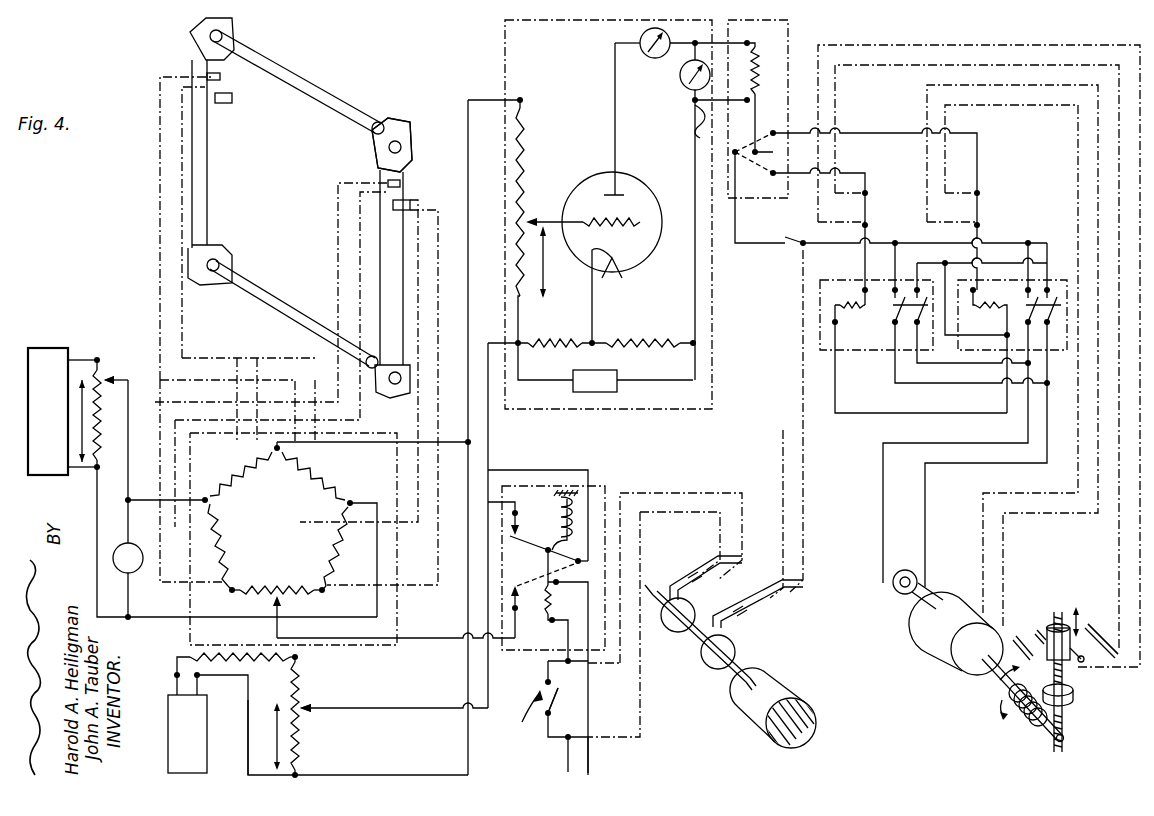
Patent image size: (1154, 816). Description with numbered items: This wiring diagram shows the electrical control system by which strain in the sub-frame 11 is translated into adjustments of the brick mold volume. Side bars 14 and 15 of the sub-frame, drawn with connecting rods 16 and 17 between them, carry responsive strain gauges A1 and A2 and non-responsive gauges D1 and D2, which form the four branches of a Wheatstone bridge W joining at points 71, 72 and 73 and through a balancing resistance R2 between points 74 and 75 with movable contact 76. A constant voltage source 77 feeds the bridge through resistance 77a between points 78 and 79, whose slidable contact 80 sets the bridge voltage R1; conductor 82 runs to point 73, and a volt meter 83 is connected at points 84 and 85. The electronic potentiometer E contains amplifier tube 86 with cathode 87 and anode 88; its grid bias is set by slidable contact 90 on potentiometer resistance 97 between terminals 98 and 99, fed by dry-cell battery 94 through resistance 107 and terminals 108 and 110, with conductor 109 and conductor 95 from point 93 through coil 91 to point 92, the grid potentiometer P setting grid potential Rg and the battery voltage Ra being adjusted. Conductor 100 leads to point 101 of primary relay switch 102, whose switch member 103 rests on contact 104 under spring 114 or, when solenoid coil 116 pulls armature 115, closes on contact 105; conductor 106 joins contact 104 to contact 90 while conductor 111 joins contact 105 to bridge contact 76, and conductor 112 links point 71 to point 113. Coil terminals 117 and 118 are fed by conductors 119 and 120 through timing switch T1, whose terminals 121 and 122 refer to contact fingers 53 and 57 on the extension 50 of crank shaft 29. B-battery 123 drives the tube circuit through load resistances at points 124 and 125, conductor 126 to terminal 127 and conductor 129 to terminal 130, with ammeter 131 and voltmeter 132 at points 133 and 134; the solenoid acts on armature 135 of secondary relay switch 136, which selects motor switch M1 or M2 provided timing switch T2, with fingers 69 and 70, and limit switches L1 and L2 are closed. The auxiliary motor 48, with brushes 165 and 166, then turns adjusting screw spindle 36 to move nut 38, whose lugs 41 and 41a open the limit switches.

The sub-frame 11 is at (402, 123).
The side bar 14 is at (211, 151).
The side bar 15 is at (392, 258).
The upper connecting rod 16 is at (312, 88).
The lower connecting rod 17 is at (282, 303).
The crank shaft 29 is at (786, 690).
The adjusting screw spindle 36 is at (1068, 676).
The nut 38 is at (1060, 624).
The lug 41 is at (1112, 662).
The lug 41a is at (1036, 632).
The auxiliary motor 48 is at (942, 650).
The axial extension 50 is at (744, 700).
The contact finger 53 is at (713, 577).
The cam lever 57 is at (710, 562).
The contact finger 69 is at (752, 592).
The contact finger 70 is at (766, 600).
The bridge point 71 is at (277, 452).
The bridge point 72 is at (352, 500).
The bridge point 73 is at (206, 497).
The connecting point 74 is at (230, 592).
The connecting point 75 is at (326, 592).
The movable contact point 76 is at (283, 588).
The constant voltage source 77 is at (48, 348).
The resistance 77a is at (108, 374).
The point 78 is at (95, 470).
The point 79 is at (99, 357).
The slidable contact 80 is at (110, 384).
The conductor 82 is at (130, 450).
The volt meter 83 is at (134, 572).
The point 84 is at (128, 500).
The point 85 is at (128, 620).
The amplifier tube 86 is at (634, 262).
The cathode 87 is at (614, 240).
The anode 88 is at (620, 192).
The slidable contact 90 is at (306, 708).
The potentiometer resistance coil 91 is at (526, 206).
The point 92 is at (521, 340).
The point 93 is at (524, 99).
The constant voltage source 94 is at (168, 722).
The conductor 95 is at (469, 278).
The potentiometer resistance 97 is at (303, 712).
The terminal 98 is at (298, 657).
The terminal 99 is at (300, 777).
The conductor 100 is at (544, 470).
The point 101 is at (578, 563).
The relay switch 102 is at (600, 488).
The switch member 103 is at (532, 546).
The contact point 104 is at (549, 493).
The contact point 105 is at (544, 598).
The conductor 106 is at (430, 710).
The resistance 107 is at (252, 660).
The terminal 108 is at (174, 676).
The conductor 109 is at (246, 752).
The terminal 110 is at (200, 676).
The conductor 111 is at (425, 640).
The conductor 112 is at (360, 442).
The point 113 is at (466, 440).
The spring 114 is at (566, 530).
The armature 115 is at (555, 347).
The solenoid coil 116 is at (654, 347).
The terminal 117 is at (558, 584).
The terminal 118 is at (553, 624).
The conductor 119 is at (590, 708).
The conductor 120 is at (548, 682).
The terminal 121 is at (552, 685).
The terminal 122 is at (568, 712).
The B-battery 123 is at (610, 394).
The point 124 is at (592, 340).
The point 125 is at (690, 340).
The conductor 126 is at (693, 265).
The terminal 127 is at (748, 125).
The conductor 129 is at (613, 118).
The terminal 130 is at (745, 48).
The ammeter 131 is at (650, 58).
The voltmeter 132 is at (688, 86).
The point 133 is at (706, 38).
The point 134 is at (697, 137).
The armature 135 is at (757, 86).
The secondary relay switch 136 is at (791, 44).
The commutator brush 165 is at (922, 586).
The commutator brush 166 is at (893, 574).
The responsive strain gauge A1 is at (224, 95).
The responsive strain gauge A2 is at (410, 203).
The non-responsive strain gauge D1 is at (205, 62).
The non-responsive strain gauge D2 is at (402, 180).
The electronic potentiometer E is at (688, 415).
The limit switch L1 is at (1005, 222).
The limit switch L2 is at (895, 222).
The motor switch M1 is at (860, 352).
The motor switch M2 is at (985, 354).
The grid potentiometer P is at (527, 176).
The bridge voltage R1 is at (86, 413).
The balancing resistance R2 is at (277, 578).
The battery voltage Ra is at (278, 716).
The grid potential Rg is at (554, 258).
The timing switch T1 is at (672, 632).
The timing switch T2 is at (710, 672).
The Wheatstone bridge W is at (190, 635).